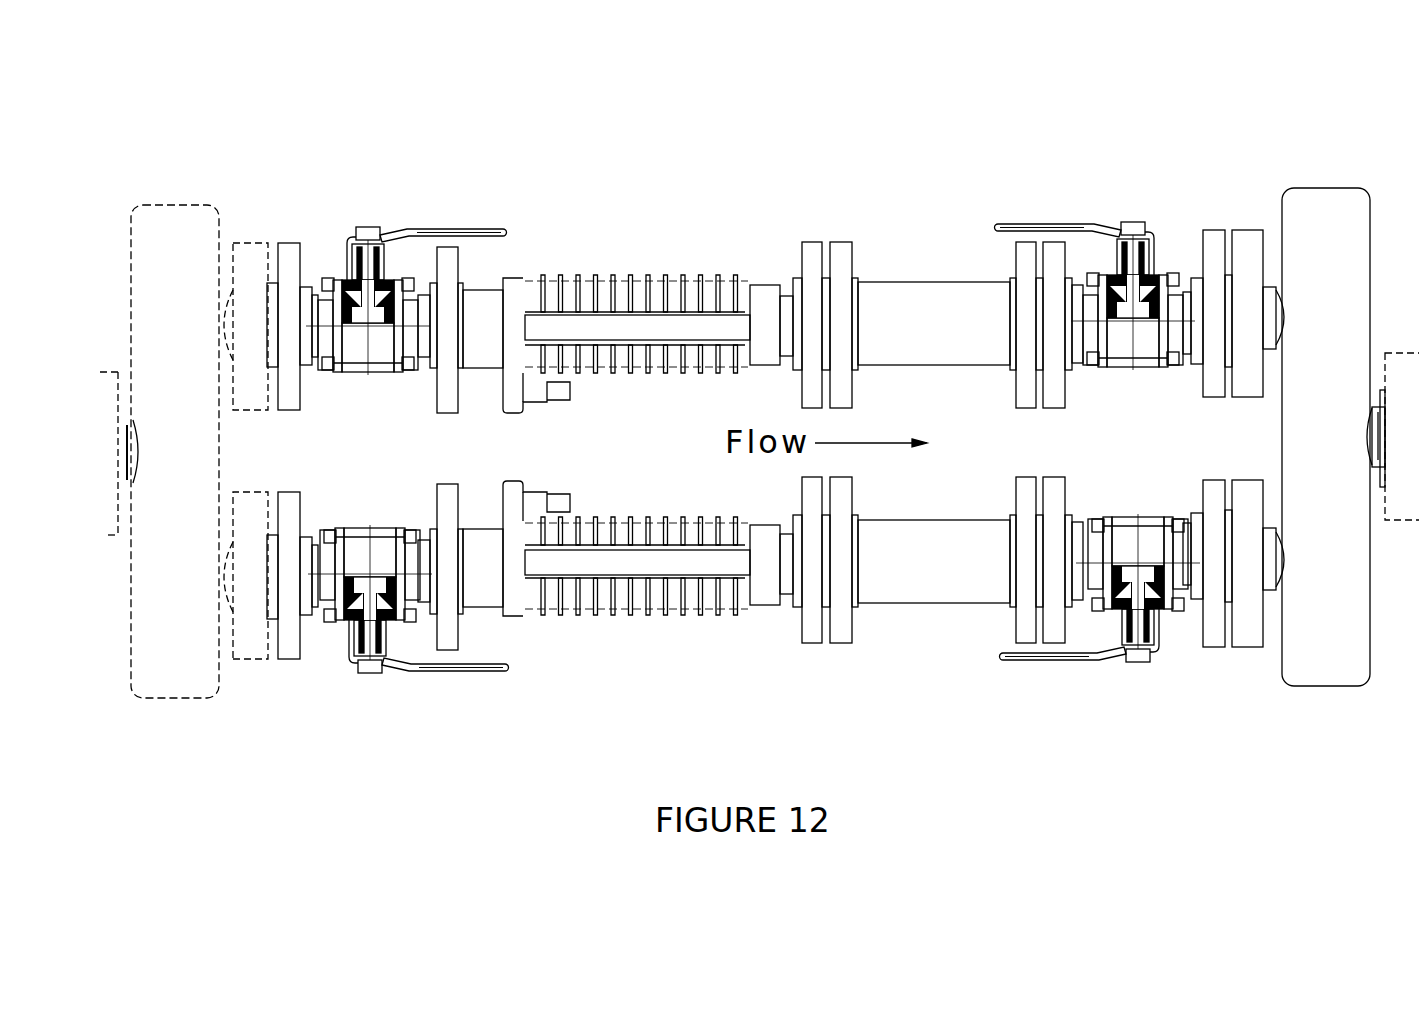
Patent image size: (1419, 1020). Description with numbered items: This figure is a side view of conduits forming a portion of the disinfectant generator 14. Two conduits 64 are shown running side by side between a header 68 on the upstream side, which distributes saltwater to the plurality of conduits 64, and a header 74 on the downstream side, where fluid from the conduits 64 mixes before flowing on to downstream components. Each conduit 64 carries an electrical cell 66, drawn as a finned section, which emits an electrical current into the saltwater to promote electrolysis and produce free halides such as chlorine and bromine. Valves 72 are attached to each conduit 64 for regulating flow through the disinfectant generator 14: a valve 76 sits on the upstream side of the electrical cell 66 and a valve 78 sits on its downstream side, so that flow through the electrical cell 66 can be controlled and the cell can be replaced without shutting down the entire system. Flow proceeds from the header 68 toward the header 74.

The disinfectant generator 14 is at (908, 116).
The conduit 64 is at (490, 287).
The electrical cell 66 is at (630, 280).
The header 68 is at (179, 700).
The valve 72 is at (367, 227).
The header 74 is at (1330, 687).
The valve 76 is at (360, 228).
The valve 78 is at (1150, 230).